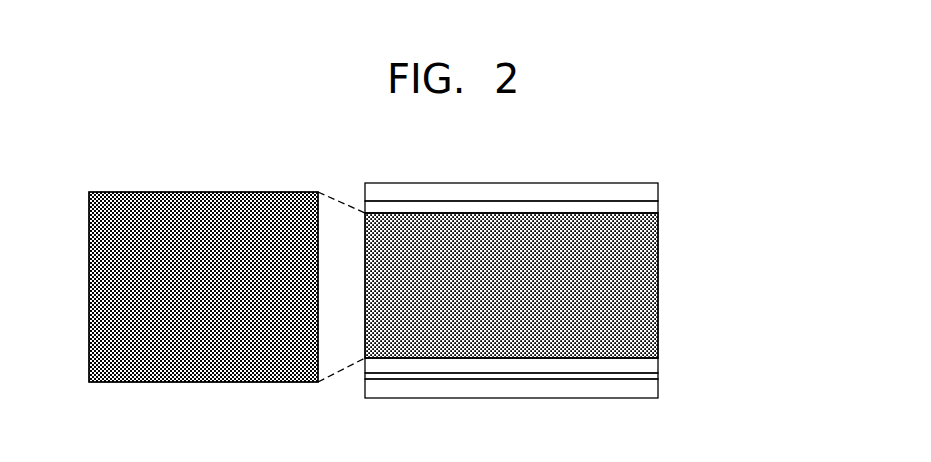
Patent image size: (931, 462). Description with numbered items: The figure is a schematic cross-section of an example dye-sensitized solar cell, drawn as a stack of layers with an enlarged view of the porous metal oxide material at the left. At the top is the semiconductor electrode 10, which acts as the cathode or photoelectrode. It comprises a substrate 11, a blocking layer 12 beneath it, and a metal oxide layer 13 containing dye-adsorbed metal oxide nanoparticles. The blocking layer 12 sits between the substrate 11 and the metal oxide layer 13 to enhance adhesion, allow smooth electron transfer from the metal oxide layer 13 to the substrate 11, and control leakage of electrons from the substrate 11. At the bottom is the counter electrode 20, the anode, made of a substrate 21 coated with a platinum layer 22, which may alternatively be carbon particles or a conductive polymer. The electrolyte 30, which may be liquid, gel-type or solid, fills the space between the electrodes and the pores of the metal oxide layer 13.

The semiconductor electrode 10 is at (570, 260).
The substrate 11 is at (658, 187).
The blocking layer 12 is at (658, 207).
The metal oxide layer 13 is at (551, 285).
The electrolyte 30 is at (658, 365).
The counter electrode 20 is at (570, 380).
The platinum layer 22 is at (658, 375).
The substrate 21 is at (551, 399).